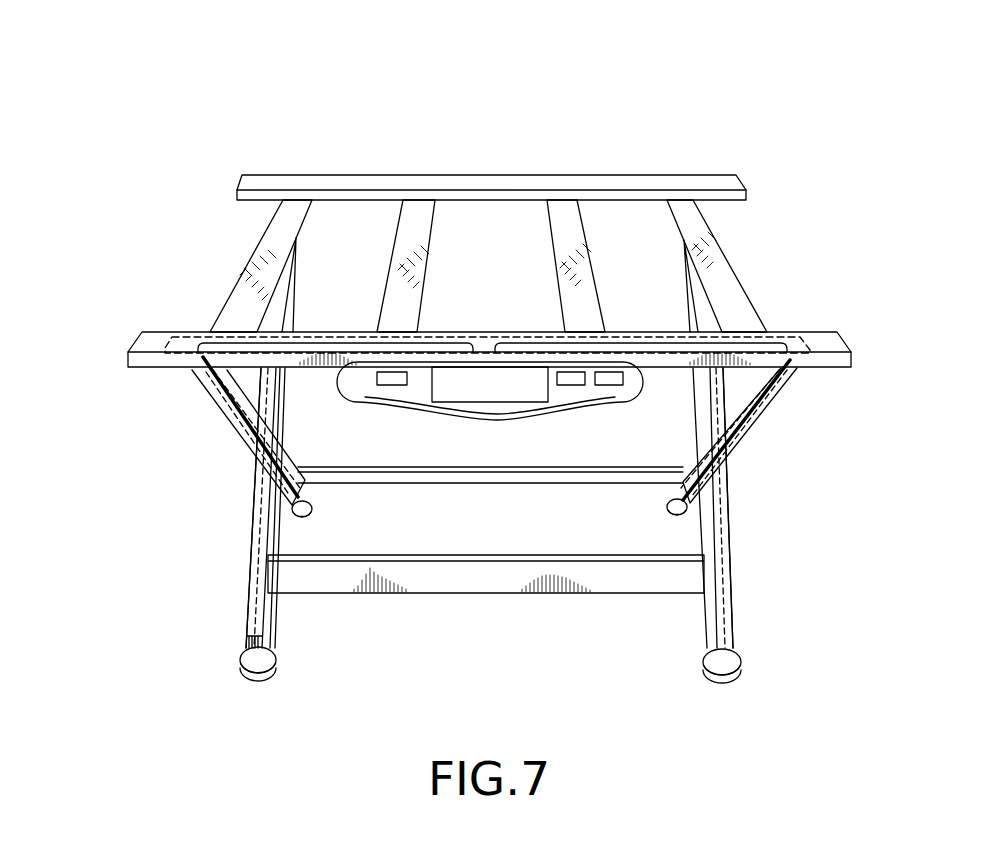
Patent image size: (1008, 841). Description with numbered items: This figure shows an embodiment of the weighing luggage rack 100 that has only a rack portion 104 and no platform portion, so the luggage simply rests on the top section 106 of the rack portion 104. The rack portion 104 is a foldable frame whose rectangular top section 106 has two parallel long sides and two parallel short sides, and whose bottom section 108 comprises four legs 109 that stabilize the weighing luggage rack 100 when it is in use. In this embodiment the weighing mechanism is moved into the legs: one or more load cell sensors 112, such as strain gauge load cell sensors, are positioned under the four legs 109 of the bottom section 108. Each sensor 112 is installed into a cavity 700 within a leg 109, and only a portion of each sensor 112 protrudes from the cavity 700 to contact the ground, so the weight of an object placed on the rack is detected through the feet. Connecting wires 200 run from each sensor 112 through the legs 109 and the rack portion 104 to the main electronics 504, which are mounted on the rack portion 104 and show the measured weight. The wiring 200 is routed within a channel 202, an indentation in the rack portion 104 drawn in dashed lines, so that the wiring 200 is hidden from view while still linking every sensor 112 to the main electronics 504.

The weighing luggage rack 100 is at (262, 90).
The rack portion 104 is at (820, 340).
The top section 106 is at (121, 176).
The bottom section 108 is at (121, 378).
The legs 109 is at (268, 487).
The load cell sensors 112 is at (310, 512).
The connection wiring 200 is at (717, 517).
The channel 202 is at (263, 568).
The main electronics 504 is at (578, 400).
The cavity 700 is at (270, 638).